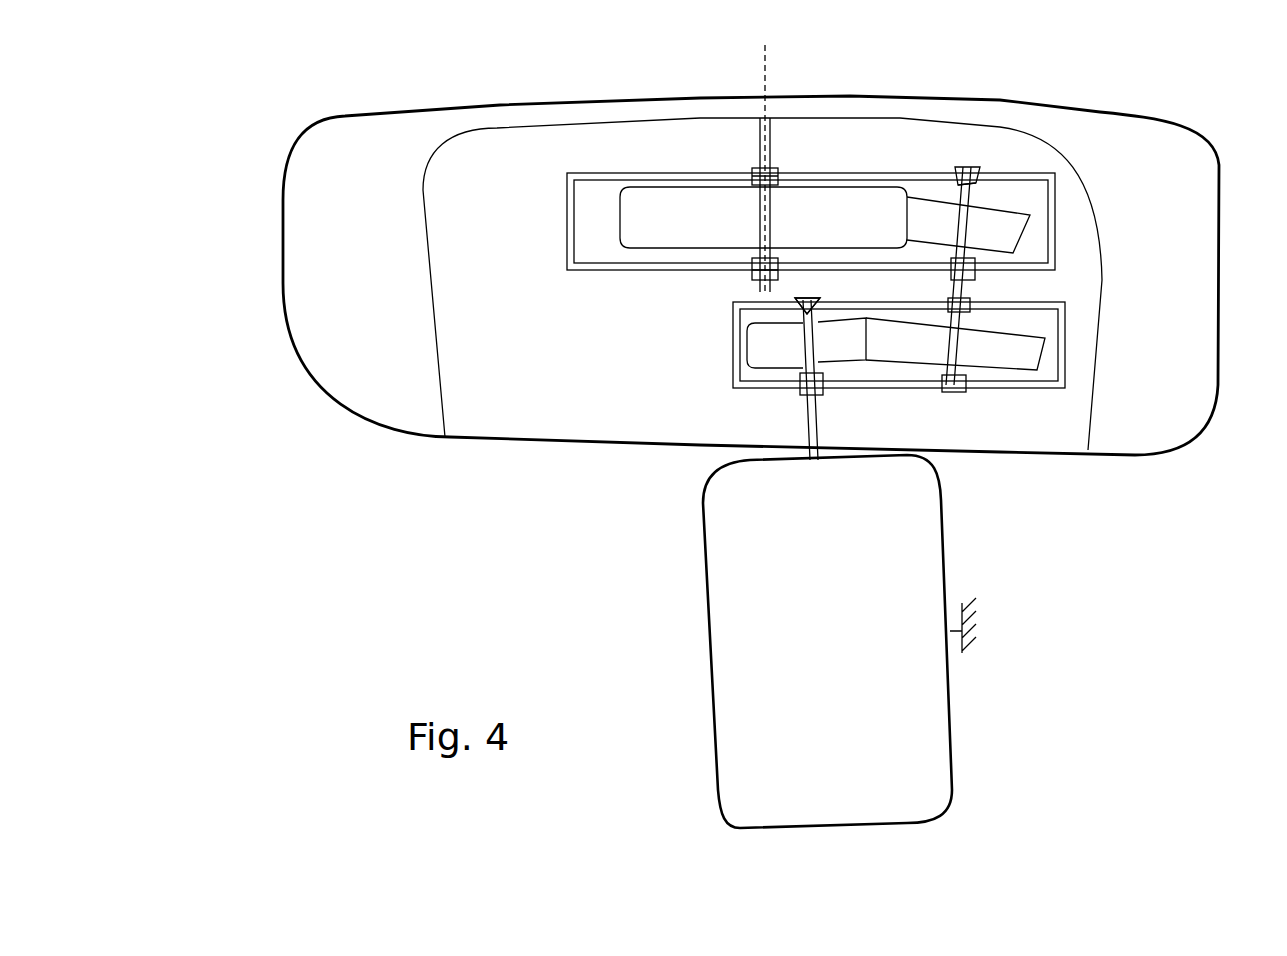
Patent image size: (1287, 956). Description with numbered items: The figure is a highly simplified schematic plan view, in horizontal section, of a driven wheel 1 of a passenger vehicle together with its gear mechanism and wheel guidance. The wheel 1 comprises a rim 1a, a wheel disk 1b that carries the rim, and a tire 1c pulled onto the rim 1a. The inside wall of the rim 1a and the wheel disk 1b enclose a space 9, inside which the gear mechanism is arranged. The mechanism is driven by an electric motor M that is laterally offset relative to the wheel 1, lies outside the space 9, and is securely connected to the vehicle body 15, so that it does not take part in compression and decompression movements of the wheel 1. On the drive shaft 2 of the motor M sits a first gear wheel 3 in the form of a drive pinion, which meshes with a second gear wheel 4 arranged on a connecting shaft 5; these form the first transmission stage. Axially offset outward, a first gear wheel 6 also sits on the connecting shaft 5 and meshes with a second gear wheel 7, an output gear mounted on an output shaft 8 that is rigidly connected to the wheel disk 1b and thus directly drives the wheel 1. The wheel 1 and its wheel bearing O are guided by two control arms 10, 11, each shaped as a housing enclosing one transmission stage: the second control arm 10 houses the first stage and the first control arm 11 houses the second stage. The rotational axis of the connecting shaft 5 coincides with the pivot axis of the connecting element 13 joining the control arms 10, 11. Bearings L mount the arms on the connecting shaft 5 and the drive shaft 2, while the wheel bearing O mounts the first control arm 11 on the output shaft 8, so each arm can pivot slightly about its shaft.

The wheel 1 is at (1196, 120).
The rim 1a is at (426, 290).
The wheel disk 1b is at (681, 102).
The tire 1c is at (1212, 175).
The drive shaft 2 is at (819, 420).
The first gear wheel of the first transmission stage 3 is at (756, 378).
The second gear wheel of the first transmission stage 4 is at (1003, 372).
The connecting shaft 5 is at (968, 293).
The first gear wheel of the second transmission stage 6 is at (928, 200).
The second gear wheel of the second transmission stage 7 is at (640, 188).
The output shaft 8 is at (771, 150).
The space 9 is at (930, 120).
The second control arm 10 is at (740, 330).
The first control arm 11 is at (608, 270).
The connecting element 13 is at (954, 276).
The vehicle body 15 is at (980, 652).
The electric motor M is at (712, 672).
The bearings L is at (975, 172).
The wheel bearing O is at (755, 176).